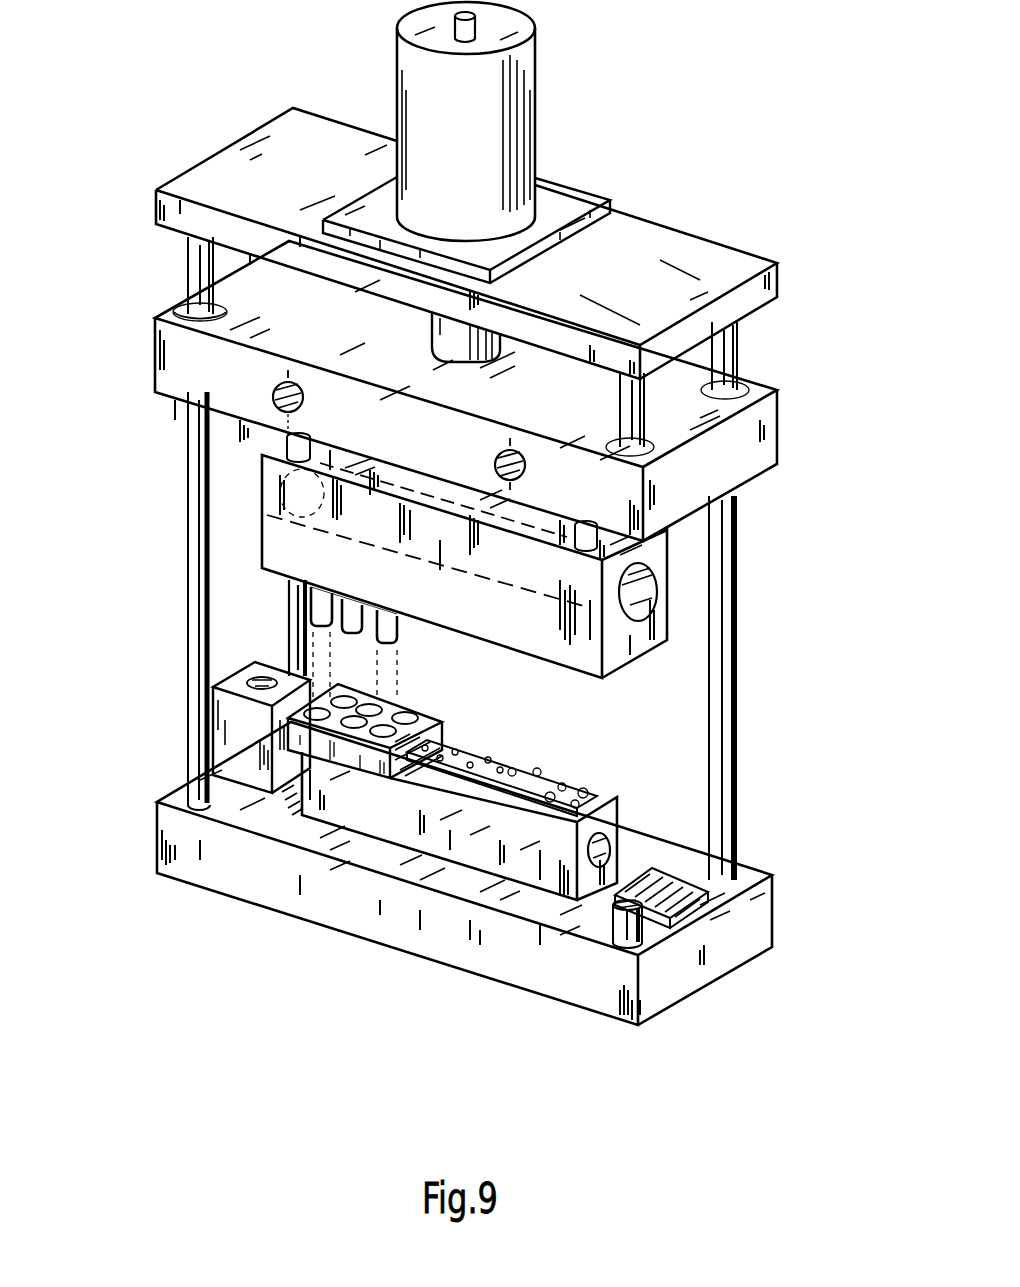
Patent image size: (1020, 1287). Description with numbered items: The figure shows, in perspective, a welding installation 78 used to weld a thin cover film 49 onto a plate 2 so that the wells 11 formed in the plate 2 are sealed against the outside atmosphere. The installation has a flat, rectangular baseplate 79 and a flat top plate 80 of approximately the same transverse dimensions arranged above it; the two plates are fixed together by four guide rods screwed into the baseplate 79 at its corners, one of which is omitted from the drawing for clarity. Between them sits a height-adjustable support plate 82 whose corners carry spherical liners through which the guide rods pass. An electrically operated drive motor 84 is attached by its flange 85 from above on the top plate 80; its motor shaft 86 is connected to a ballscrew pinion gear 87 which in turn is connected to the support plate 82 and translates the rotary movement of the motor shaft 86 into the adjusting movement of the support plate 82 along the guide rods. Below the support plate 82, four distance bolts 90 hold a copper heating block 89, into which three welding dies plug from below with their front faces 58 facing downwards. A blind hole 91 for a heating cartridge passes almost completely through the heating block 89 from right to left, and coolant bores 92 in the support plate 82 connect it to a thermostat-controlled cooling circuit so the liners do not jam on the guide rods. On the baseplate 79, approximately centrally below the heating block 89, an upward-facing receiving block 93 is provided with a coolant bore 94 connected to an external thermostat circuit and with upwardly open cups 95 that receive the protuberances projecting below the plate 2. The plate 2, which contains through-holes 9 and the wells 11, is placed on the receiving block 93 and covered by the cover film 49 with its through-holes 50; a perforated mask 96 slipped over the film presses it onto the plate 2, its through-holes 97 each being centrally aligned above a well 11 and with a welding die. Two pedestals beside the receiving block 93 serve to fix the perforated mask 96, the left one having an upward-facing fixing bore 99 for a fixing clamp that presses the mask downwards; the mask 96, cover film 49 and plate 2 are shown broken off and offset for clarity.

The welding installation 78 is at (668, 207).
The baseplate 79 is at (723, 957).
The top plate 80 is at (733, 270).
The support plate 82 is at (762, 432).
The drive motor 84 is at (537, 70).
The flange 85 is at (557, 202).
The motor shaft 86 is at (507, 8).
The ballscrew pinion gear 87 is at (453, 337).
The heating block 89 is at (283, 528).
The distance bolts 90 is at (287, 442).
The blind hole 91 is at (660, 592).
The coolant bores 92 is at (273, 393).
The receiving block 93 is at (447, 843).
The coolant bore 94 is at (585, 870).
The cups 95 is at (592, 793).
The perforated mask 96 is at (440, 722).
The through-holes 97 is at (387, 738).
The fixing bore 99 is at (213, 717).
The front faces 58 is at (375, 641).
The cover film 49 is at (450, 750).
The through-holes 50 is at (483, 757).
The plate 2 is at (512, 768).
The wells 11 is at (537, 768).
The through-holes 9 is at (587, 790).